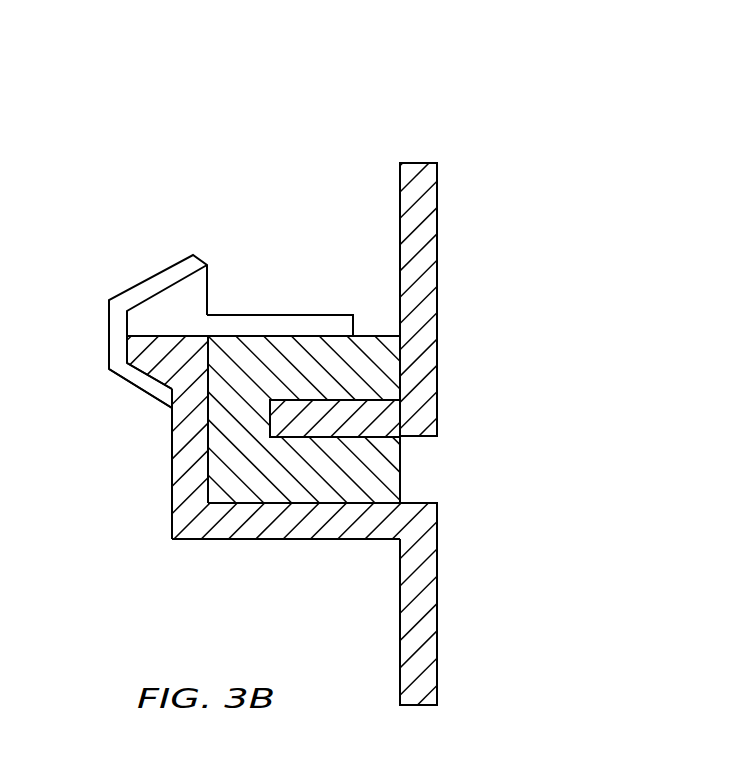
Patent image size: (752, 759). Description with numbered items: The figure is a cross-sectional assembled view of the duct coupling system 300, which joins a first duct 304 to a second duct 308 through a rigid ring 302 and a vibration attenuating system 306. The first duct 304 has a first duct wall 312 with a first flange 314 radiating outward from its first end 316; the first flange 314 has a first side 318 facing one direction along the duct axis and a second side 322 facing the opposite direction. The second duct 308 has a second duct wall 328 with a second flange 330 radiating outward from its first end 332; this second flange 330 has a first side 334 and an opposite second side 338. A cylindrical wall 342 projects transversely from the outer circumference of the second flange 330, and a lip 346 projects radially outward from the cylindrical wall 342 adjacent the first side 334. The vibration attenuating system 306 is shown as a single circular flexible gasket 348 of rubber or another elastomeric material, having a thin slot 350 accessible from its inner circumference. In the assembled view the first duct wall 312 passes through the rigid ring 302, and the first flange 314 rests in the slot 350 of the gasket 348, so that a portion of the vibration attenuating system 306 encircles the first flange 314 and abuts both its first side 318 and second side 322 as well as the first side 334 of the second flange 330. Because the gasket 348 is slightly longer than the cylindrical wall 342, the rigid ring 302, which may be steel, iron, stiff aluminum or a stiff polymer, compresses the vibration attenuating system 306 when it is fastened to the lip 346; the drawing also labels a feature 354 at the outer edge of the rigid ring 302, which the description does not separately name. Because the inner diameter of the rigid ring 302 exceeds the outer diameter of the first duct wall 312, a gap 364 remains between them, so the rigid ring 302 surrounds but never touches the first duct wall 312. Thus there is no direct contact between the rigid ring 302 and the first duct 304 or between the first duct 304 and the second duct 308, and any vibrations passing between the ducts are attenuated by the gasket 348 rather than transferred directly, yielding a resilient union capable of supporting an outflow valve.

The duct coupling system 300 is at (323, 114).
The rigid ring 302 is at (281, 315).
The first duct 304 is at (522, 294).
The vibration attenuating system 306 is at (231, 357).
The second duct 308 is at (511, 579).
The first duct wall 312 is at (437, 185).
The first flange 314 is at (315, 418).
The first end 316 is at (454, 435).
The first side 318 is at (305, 449).
The second side 322 is at (333, 387).
The second duct wall 328 is at (437, 670).
The second flange 330 is at (312, 540).
The first end 332 is at (365, 579).
The first side 334 is at (277, 496).
The second side 338 is at (187, 543).
The cylindrical wall 342 is at (172, 438).
The lip 346 is at (157, 363).
The circular flexible gasket 348 is at (242, 400).
The slot 350 is at (254, 419).
The clip 354 is at (145, 281).
The gap 364 is at (372, 292).